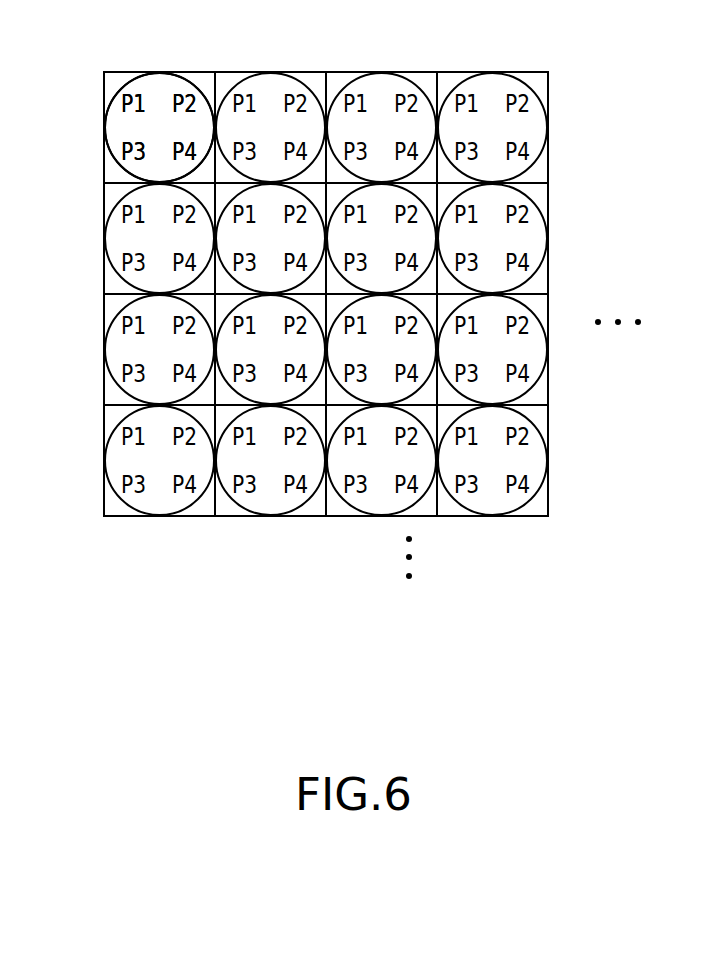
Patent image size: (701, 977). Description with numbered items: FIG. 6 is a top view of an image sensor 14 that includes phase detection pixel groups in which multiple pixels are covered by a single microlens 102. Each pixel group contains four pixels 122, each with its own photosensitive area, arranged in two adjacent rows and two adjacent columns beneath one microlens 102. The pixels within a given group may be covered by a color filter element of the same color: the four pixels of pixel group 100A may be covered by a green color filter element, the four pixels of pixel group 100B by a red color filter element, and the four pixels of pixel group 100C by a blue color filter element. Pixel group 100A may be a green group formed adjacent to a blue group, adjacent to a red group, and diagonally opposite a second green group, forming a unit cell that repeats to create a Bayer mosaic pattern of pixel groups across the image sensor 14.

The image sensor 14 is at (583, 252).
The pixel group 100A is at (198, 72).
The pixel group 100B is at (548, 78).
The pixel group 100C is at (433, 517).
The microlens 102 is at (119, 172).
The pixels 122 is at (185, 90).